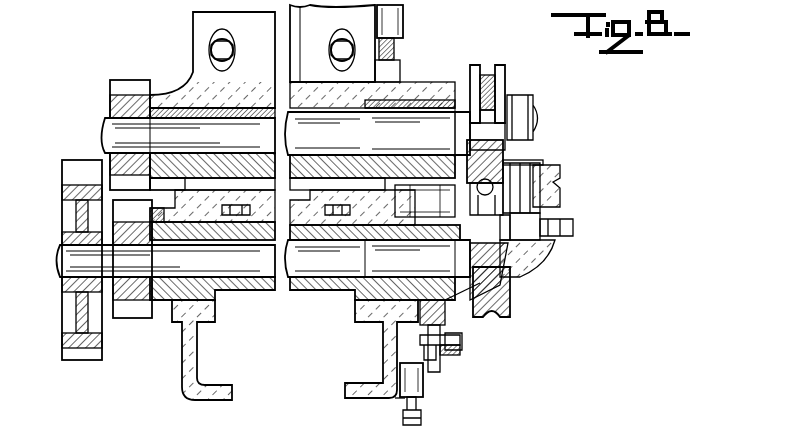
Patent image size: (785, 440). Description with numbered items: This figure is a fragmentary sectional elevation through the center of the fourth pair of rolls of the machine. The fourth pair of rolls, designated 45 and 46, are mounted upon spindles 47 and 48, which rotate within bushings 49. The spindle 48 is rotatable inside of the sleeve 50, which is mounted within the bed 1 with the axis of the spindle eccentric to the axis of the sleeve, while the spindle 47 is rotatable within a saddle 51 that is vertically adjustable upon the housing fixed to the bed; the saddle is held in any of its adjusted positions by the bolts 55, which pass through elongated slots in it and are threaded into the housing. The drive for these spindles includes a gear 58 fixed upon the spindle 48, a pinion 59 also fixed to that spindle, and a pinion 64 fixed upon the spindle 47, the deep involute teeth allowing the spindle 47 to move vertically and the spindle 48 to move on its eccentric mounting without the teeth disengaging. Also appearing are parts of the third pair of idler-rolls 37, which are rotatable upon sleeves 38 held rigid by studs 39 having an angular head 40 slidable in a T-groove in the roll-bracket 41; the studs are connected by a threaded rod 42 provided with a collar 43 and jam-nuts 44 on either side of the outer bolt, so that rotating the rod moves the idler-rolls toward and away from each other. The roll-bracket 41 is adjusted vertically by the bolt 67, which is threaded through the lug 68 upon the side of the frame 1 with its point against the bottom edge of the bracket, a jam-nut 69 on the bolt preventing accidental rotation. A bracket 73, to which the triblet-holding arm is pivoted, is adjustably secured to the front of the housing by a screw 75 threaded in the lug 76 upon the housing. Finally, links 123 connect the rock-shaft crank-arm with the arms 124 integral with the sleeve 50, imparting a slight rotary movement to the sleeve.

The bed 1 is at (355, 395).
The idler-rolls 37 is at (420, 195).
The sleeves 38 is at (552, 212).
The studs 39 is at (542, 165).
The angular head 40 is at (545, 240).
The roll-bracket 41 is at (528, 265).
The threaded rod 42 is at (574, 240).
The collar 43 is at (570, 225).
The jam-nuts 44 is at (508, 250).
The roll 45 is at (505, 74).
The roll 46 is at (500, 318).
The spindle 47 is at (102, 130).
The spindle 48 is at (55, 262).
The bushings 49 is at (170, 105).
The sleeve 50 is at (318, 295).
The saddle 51 is at (197, 30).
The bolts 55 is at (210, 50).
The gear 58 is at (80, 355).
The pinion 59 is at (135, 313).
The pinion 64 is at (118, 87).
The bolt 67 is at (422, 414).
The lug 68 is at (424, 387).
The jam-nut 69 is at (403, 402).
The bracket 73 is at (393, 78).
The screw 75 is at (398, 52).
The lug 76 is at (403, 22).
The links 123 is at (445, 362).
The arms 124 is at (443, 312).